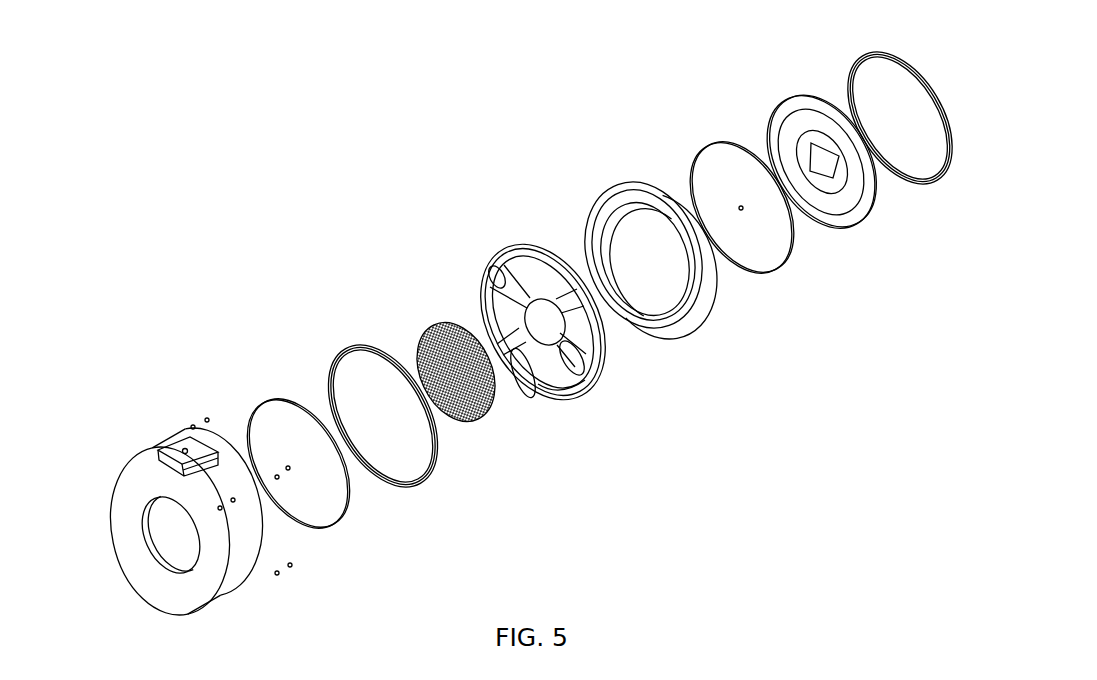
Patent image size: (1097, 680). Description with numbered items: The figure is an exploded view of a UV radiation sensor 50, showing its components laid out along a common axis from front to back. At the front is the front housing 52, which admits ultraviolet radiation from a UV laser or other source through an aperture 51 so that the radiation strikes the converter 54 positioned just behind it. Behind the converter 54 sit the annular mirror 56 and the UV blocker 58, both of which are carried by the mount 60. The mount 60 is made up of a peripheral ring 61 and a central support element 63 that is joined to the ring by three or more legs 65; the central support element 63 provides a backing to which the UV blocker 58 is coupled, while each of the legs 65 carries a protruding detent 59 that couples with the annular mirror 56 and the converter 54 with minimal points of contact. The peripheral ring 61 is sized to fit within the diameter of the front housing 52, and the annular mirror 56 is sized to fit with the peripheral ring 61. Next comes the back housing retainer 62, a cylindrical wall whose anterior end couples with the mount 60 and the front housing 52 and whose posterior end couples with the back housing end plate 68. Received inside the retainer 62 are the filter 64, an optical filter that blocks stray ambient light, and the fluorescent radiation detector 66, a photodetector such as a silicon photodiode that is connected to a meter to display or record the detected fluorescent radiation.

The UV radiation sensor 50 is at (205, 252).
The aperture 51 is at (136, 506).
The front housing 52 is at (108, 439).
The converter 54 is at (273, 413).
The annular mirror 56 is at (435, 453).
The UV blocker 58 is at (495, 397).
The protruding detent 59 is at (505, 273).
The mount 60 is at (487, 251).
The peripheral ring 61 is at (603, 370).
The central support element 63 is at (593, 350).
The legs 65 is at (530, 372).
The back housing retainer 62 is at (605, 184).
The filter 64 is at (698, 149).
The fluorescent radiation detector 66 is at (783, 97).
The back housing end plate 68 is at (848, 54).